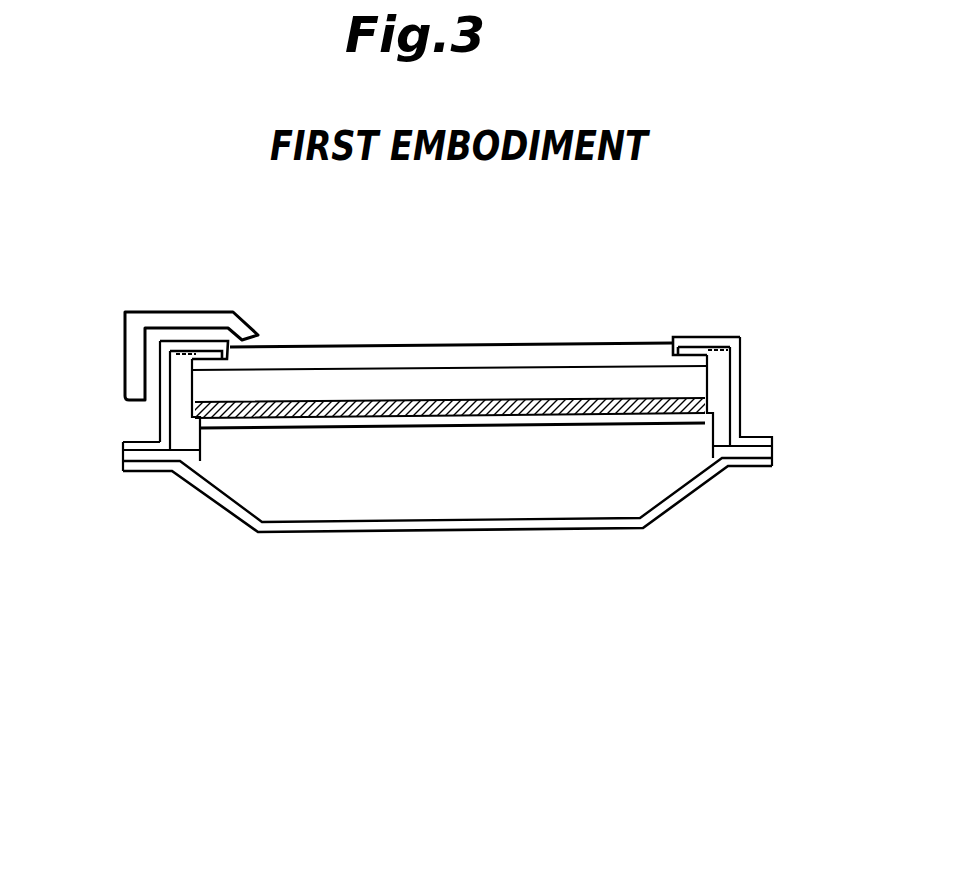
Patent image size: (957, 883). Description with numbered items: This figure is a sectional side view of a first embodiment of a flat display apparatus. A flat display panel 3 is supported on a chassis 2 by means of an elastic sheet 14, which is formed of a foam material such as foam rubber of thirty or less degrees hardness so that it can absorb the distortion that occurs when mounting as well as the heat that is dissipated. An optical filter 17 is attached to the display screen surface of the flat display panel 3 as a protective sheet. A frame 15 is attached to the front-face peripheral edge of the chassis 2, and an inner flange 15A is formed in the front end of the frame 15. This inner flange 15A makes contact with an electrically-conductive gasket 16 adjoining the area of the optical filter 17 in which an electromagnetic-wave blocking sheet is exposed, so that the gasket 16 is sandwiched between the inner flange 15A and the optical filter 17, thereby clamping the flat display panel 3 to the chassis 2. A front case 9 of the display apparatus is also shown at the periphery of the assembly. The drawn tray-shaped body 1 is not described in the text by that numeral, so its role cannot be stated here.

The container 1 is at (524, 533).
The chassis 2 is at (409, 419).
The flat display panel 3 is at (402, 366).
The front case 9 is at (210, 312).
The elastic sheet 14 is at (566, 411).
The frame 15 is at (158, 408).
The inner flange 15A is at (193, 347).
The electrically-conductive gasket 16 is at (188, 353).
The optical filter 17 is at (486, 341).